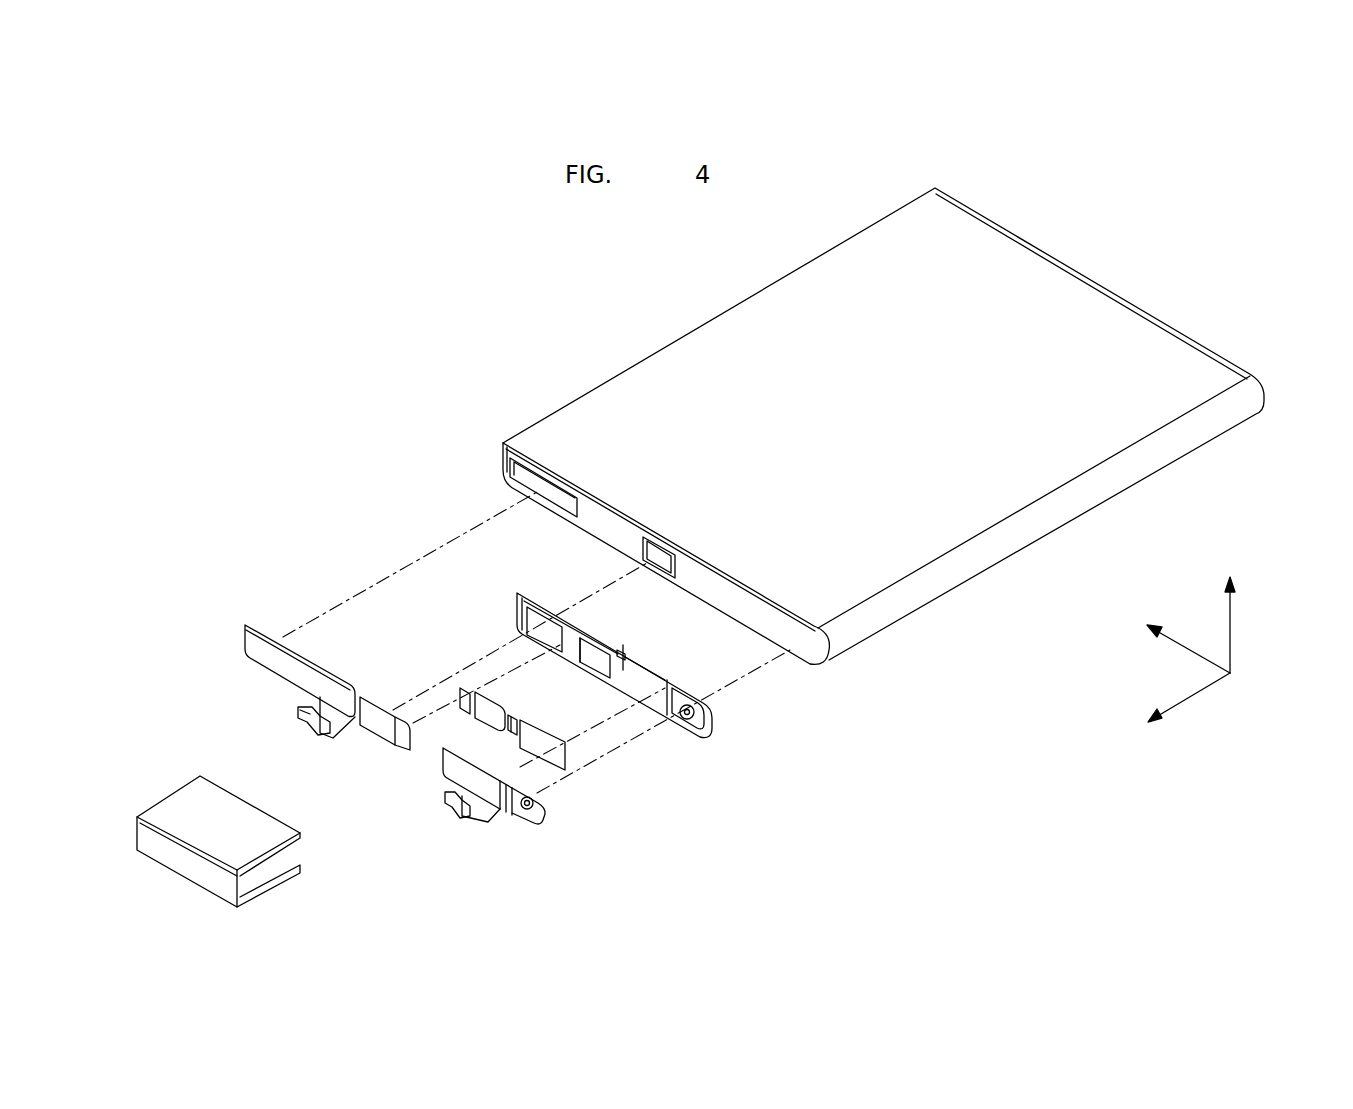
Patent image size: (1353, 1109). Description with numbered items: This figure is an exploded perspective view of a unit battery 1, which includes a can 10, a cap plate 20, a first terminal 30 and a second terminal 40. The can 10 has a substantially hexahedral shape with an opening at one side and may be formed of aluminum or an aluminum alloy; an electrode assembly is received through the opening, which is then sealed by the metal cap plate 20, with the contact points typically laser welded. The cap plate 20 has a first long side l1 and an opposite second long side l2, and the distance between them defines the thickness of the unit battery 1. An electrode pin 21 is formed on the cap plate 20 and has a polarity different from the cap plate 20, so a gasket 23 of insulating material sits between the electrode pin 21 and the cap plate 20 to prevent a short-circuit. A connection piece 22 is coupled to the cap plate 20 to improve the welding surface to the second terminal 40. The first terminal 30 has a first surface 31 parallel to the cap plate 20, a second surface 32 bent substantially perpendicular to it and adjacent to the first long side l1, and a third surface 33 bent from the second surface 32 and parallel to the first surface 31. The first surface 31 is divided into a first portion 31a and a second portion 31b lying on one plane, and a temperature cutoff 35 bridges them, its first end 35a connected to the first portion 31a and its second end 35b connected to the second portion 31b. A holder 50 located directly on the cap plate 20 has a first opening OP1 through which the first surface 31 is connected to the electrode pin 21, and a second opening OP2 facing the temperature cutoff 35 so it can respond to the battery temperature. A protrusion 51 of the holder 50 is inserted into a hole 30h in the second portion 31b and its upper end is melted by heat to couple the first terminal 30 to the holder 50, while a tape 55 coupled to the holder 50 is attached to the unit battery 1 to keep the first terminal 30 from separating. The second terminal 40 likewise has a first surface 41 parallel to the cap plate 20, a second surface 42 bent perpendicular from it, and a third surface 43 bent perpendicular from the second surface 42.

The unit battery 1 is at (1104, 276).
The can 10 is at (931, 589).
The cap plate 20 is at (813, 650).
The electrode pin 21 is at (654, 555).
The connection piece 22 is at (566, 500).
The gasket 23 is at (678, 550).
The first terminal 30 is at (515, 818).
The hole 30h is at (548, 818).
The first surface 31 is at (366, 814).
The first portion 31a is at (382, 727).
The second portion 31b is at (467, 775).
The second surface 32 is at (482, 806).
The third surface 33 is at (455, 803).
The temperature cutoff (TCO) 35 is at (490, 702).
The first end 35a is at (462, 690).
The second end 35b is at (521, 722).
The second terminal 40 is at (242, 659).
The first surface 41 is at (272, 661).
The second surface 42 is at (333, 720).
The third surface 43 is at (310, 718).
The holder 50 is at (713, 718).
The protrusion 51 is at (690, 733).
The tape 55 is at (182, 865).
The first opening OP1 is at (538, 617).
The second opening OP2 is at (590, 647).
The first long side l1 is at (737, 622).
The second long side l2 is at (770, 595).